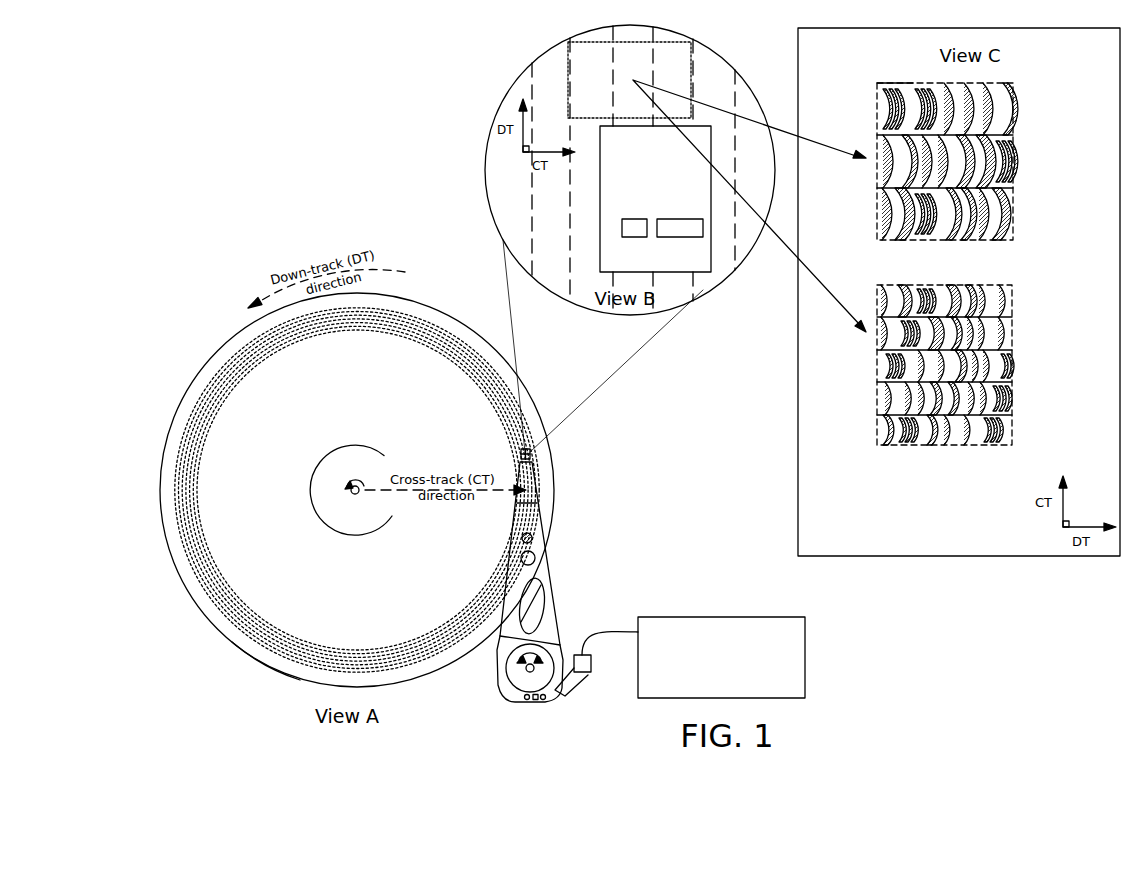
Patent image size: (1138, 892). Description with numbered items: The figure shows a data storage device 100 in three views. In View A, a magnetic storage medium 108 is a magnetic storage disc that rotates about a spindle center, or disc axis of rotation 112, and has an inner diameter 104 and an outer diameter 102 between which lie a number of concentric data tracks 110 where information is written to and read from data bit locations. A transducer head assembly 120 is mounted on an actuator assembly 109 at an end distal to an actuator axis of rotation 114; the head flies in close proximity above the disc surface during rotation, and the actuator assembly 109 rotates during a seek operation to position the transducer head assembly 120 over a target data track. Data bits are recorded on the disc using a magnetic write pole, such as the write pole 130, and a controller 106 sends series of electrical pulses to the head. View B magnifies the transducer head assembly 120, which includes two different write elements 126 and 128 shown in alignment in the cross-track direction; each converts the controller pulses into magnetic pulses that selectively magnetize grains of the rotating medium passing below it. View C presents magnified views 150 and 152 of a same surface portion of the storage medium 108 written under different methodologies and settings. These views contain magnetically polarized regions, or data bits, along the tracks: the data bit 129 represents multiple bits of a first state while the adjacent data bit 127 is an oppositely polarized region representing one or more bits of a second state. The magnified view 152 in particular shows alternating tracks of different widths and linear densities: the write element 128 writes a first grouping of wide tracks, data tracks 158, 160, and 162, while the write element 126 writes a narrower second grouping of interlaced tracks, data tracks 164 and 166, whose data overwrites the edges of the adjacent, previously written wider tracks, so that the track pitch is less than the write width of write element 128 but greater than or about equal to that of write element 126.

The data storage device 100 is at (270, 103).
The outer diameter 102 is at (226, 344).
The inner diameter 104 is at (313, 500).
The controller 106 is at (693, 657).
The magnetic storage medium 108 is at (232, 642).
The actuator assembly 109 is at (545, 568).
The concentric data tracks 110 is at (214, 603).
The disc axis of rotation 112 is at (348, 484).
The actuator axis of rotation 114 is at (530, 668).
The transducer head assembly 120 is at (534, 457).
The write element 126 is at (630, 237).
The data bit 127 is at (870, 76).
The write element 128 is at (680, 228).
The data bit 129 is at (907, 85).
The write pole 130 is at (563, 688).
The magnified view 150 is at (914, 141).
The magnified view 152 is at (963, 286).
The data track 158 is at (1026, 298).
The data track 160 is at (1026, 368).
The data track 162 is at (1026, 432).
The data track 164 is at (1026, 332).
The data track 166 is at (1026, 397).